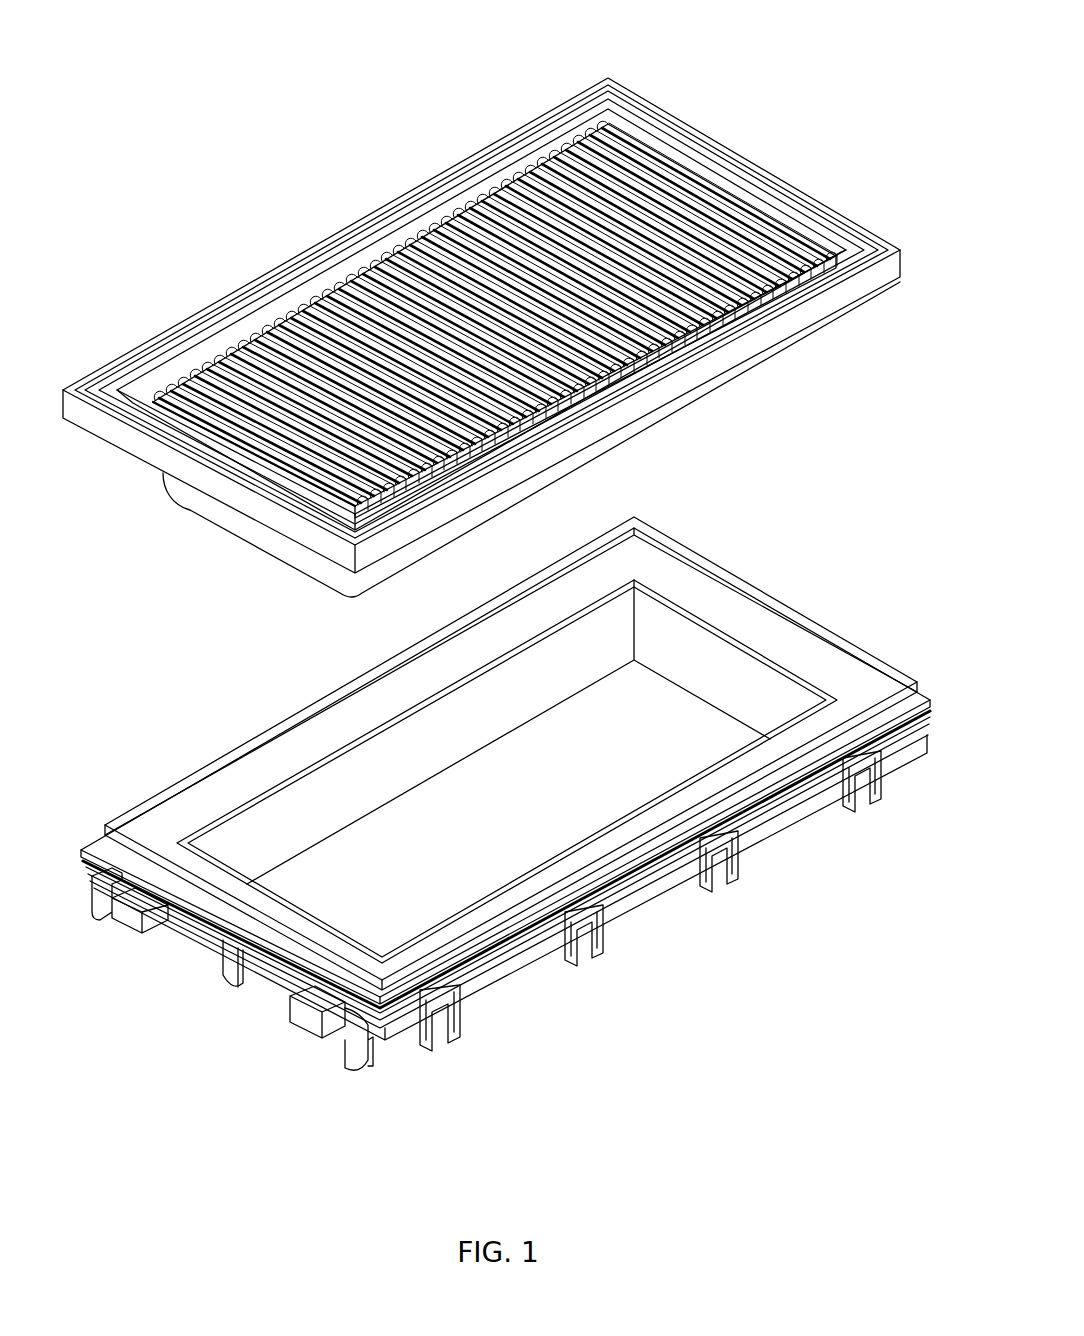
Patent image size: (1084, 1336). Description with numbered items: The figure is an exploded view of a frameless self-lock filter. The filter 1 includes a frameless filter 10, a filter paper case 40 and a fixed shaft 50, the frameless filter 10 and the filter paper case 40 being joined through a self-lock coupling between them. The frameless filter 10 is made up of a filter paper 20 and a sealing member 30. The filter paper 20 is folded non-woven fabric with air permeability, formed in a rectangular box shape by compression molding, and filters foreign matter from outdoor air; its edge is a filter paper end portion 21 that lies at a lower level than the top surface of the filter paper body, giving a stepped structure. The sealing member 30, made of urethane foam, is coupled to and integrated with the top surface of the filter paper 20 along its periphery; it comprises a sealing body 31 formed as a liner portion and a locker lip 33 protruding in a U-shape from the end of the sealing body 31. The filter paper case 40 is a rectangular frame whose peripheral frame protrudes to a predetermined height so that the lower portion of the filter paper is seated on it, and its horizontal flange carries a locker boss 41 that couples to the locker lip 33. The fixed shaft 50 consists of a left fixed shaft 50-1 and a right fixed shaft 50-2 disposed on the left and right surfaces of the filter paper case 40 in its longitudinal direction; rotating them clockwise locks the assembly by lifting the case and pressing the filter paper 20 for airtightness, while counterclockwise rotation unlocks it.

The filter 1 is at (174, 150).
The frameless filter 10 is at (327, 96).
The filter paper 20 is at (440, 240).
The filter paper end portion 21 is at (725, 188).
The sealing member 30 is at (385, 222).
The sealing body 31 is at (782, 203).
The locker lip 33 is at (840, 217).
The filter paper case 40 is at (763, 682).
The locker boss 41 is at (648, 902).
The fixed shaft 50 is at (160, 1128).
The left fixed shaft 50-1 is at (125, 915).
The right fixed shaft 50-2 is at (302, 1022).